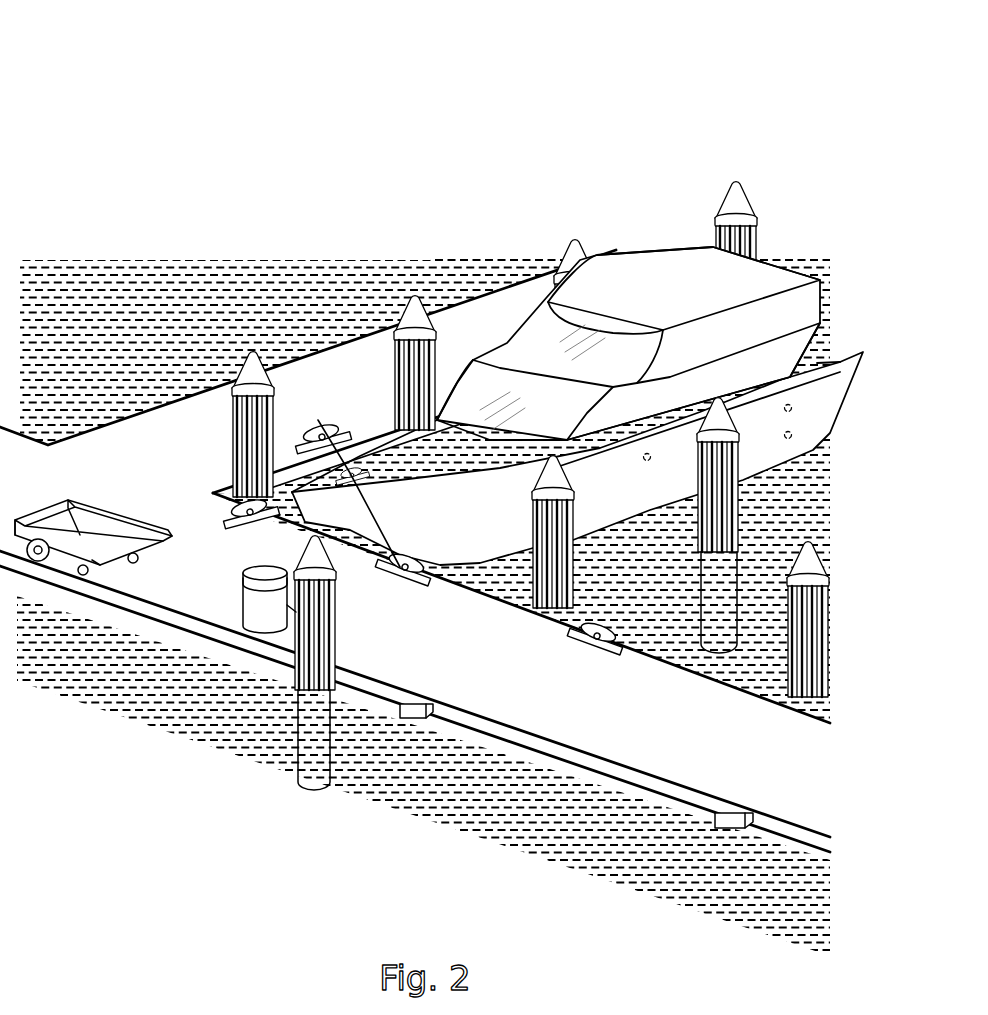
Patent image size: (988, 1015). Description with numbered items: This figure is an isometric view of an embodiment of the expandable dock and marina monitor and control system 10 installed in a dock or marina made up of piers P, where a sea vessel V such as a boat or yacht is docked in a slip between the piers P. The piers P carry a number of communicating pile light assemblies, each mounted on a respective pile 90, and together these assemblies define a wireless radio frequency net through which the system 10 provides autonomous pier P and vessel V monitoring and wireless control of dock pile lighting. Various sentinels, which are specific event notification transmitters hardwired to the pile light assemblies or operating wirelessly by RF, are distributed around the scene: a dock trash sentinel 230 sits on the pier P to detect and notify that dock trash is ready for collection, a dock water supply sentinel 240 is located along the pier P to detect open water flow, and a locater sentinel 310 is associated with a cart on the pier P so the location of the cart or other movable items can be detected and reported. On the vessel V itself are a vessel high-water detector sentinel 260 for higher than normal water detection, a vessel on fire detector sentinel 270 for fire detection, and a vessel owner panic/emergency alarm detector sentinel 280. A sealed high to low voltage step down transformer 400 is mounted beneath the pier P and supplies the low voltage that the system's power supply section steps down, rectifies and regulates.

The expandable dock and marina monitor and control system 10 is at (113, 97).
The pile 90 is at (293, 750).
The dock trash sentinel 230 is at (237, 607).
The dock water supply sentinel 240 is at (720, 824).
The vessel high-water detector sentinel 260 is at (785, 442).
The vessel on fire detector sentinel 270 is at (797, 402).
The vessel owner panic/emergency alarm detector sentinel 280 is at (645, 476).
The locater sentinel 310 is at (125, 513).
The sealed high to low voltage step down transformer 400 is at (417, 718).
The pier P is at (513, 283).
The vessel V is at (577, 437).